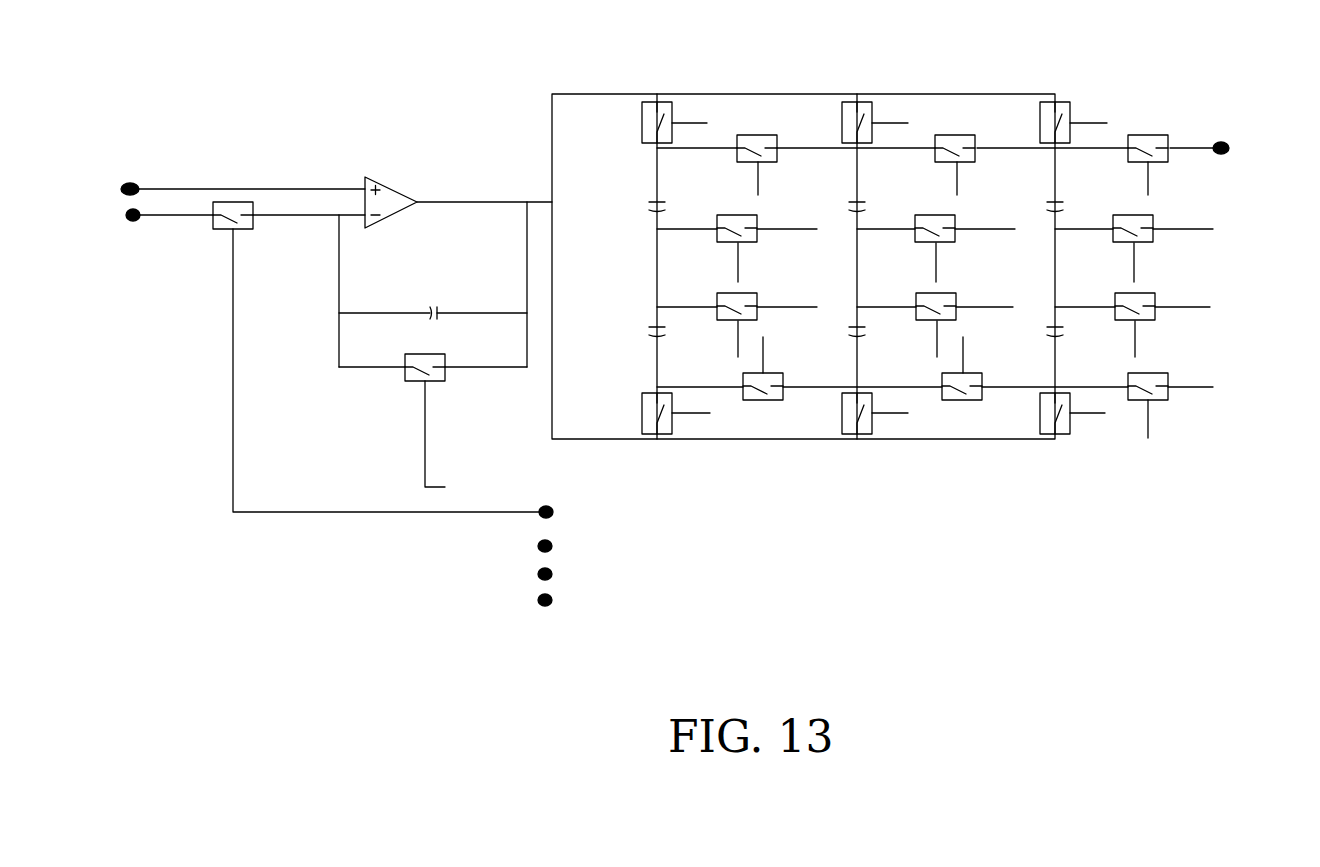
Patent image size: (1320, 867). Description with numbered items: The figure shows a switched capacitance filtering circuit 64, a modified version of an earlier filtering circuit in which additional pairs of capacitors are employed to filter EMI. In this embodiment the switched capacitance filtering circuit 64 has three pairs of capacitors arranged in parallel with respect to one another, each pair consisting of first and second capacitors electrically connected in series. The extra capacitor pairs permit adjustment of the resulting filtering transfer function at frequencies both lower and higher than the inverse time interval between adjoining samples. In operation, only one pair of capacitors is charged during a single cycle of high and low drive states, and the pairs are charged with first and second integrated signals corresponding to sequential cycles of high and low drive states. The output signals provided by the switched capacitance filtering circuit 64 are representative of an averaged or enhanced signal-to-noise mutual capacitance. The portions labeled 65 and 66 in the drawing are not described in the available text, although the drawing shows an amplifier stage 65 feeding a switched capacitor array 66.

The switched capacitance filtering circuit 64 is at (360, 328).
The operational amplifier 65 is at (431, 276).
The switched capacitor array 66 is at (909, 333).